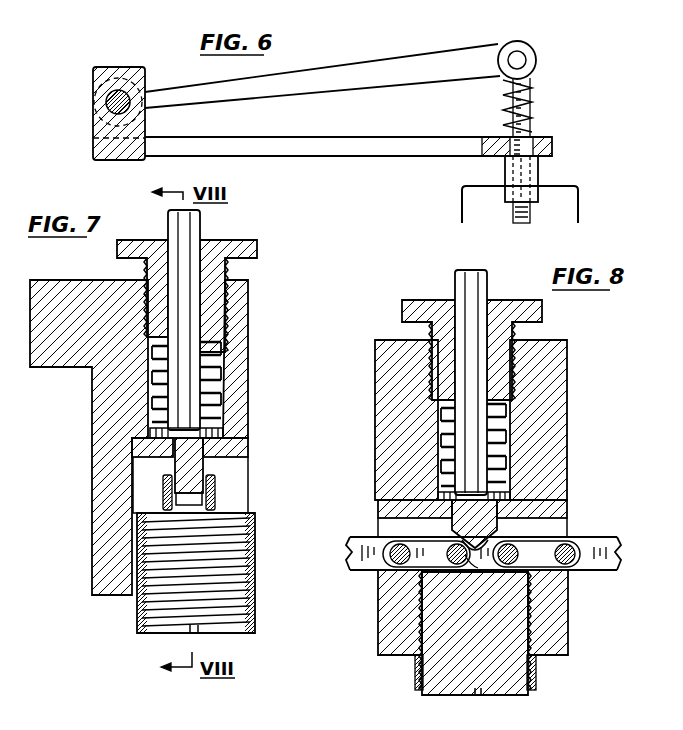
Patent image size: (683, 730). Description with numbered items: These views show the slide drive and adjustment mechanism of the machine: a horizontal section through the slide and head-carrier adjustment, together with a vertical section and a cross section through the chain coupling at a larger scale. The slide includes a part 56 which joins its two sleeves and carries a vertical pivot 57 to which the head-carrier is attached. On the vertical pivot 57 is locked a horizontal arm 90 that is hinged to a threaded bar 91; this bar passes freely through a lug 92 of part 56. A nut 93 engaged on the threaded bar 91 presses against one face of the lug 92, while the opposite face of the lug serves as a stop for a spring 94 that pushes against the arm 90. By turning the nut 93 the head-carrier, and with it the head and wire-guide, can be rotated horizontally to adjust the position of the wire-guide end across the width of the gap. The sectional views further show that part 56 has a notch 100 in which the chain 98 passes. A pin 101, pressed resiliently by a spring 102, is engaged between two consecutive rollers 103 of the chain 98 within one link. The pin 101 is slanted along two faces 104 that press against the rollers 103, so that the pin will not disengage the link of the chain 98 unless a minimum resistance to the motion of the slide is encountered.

In FIG. 6, the part of the slide 56 is at (95, 128).
In FIG. 7, the part of the slide 56 is at (249, 320).
In FIG. 8, the part of the slide 56 is at (567, 372).
In FIG. 6, the vertical pivot 57 is at (115, 90).
In FIG. 6, the horizontal arm 90 is at (341, 79).
In FIG. 6, the threaded bar 91 is at (507, 210).
In FIG. 6, the lug 92 is at (362, 156).
In FIG. 6, the nut 93 is at (540, 172).
In FIG. 6, the spring 94 is at (535, 112).
In FIG. 7, the chain 98 is at (163, 492).
In FIG. 8, the chain 98 is at (596, 566).
In FIG. 7, the notch 100 is at (232, 504).
In FIG. 8, the notch 100 is at (562, 505).
In FIG. 7, the pin 101 is at (201, 232).
In FIG. 8, the pin 101 is at (455, 289).
In FIG. 7, the spring 102 is at (222, 368).
In FIG. 8, the spring 102 is at (508, 432).
In FIG. 7, the rollers 103 is at (250, 530).
In FIG. 8, the rollers 103 is at (440, 540).
In FIG. 8, the slanted faces 104 is at (470, 566).